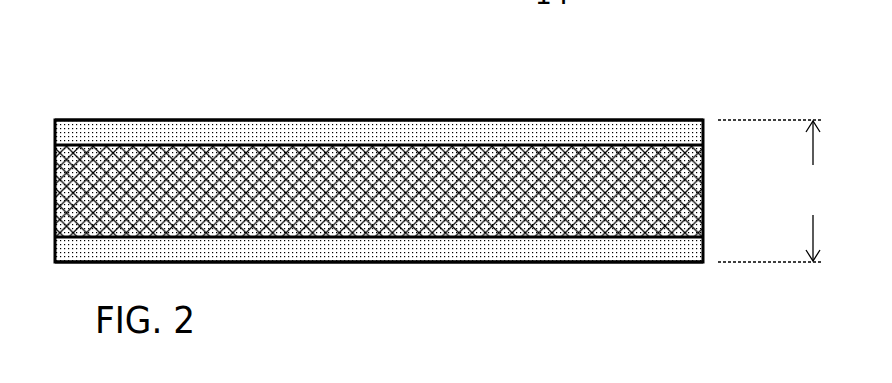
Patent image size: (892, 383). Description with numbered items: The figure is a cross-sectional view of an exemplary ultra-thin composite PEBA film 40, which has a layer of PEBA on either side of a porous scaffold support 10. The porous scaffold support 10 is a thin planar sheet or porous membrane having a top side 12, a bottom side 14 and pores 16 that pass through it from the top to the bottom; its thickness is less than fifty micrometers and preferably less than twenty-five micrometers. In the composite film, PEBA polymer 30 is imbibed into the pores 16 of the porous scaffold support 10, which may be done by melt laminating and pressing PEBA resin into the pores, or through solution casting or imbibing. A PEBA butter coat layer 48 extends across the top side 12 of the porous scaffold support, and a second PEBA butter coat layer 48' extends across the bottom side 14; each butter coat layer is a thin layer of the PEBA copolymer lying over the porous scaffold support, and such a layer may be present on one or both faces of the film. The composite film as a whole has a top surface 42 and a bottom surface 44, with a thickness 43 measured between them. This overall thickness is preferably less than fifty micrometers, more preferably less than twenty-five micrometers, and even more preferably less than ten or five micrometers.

The ultra-thin composite PEBA film 40 is at (130, 110).
The porous scaffold support 10 is at (155, 163).
The PEBA polymer 30 is at (243, 165).
The top surface 42 is at (345, 124).
The PEBA butter coat layer 48 is at (379, 85).
The pores 16 is at (550, 163).
The top side 12 is at (605, 147).
The bottom side 14 is at (613, 240).
The bottom surface 44 is at (483, 263).
The PEBA butter coat layer 48' is at (390, 302).
The thickness 43 is at (775, 191).